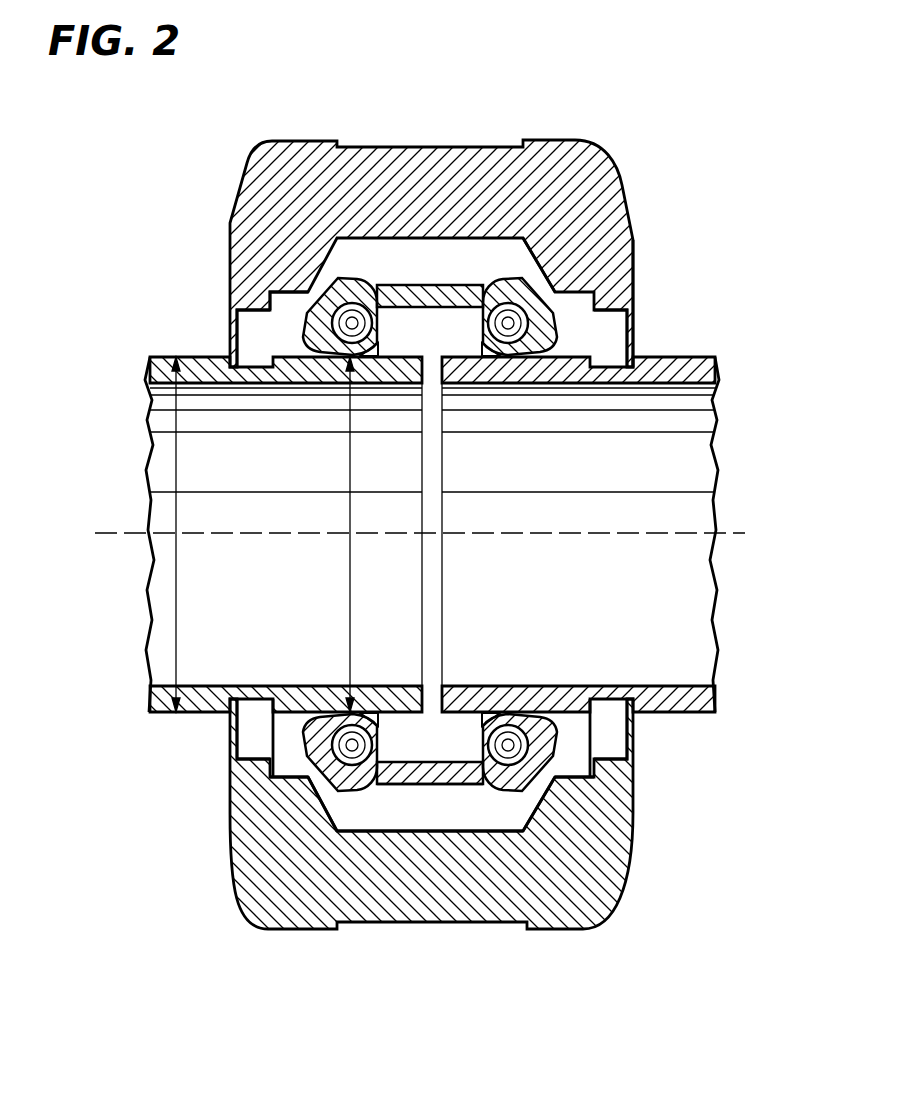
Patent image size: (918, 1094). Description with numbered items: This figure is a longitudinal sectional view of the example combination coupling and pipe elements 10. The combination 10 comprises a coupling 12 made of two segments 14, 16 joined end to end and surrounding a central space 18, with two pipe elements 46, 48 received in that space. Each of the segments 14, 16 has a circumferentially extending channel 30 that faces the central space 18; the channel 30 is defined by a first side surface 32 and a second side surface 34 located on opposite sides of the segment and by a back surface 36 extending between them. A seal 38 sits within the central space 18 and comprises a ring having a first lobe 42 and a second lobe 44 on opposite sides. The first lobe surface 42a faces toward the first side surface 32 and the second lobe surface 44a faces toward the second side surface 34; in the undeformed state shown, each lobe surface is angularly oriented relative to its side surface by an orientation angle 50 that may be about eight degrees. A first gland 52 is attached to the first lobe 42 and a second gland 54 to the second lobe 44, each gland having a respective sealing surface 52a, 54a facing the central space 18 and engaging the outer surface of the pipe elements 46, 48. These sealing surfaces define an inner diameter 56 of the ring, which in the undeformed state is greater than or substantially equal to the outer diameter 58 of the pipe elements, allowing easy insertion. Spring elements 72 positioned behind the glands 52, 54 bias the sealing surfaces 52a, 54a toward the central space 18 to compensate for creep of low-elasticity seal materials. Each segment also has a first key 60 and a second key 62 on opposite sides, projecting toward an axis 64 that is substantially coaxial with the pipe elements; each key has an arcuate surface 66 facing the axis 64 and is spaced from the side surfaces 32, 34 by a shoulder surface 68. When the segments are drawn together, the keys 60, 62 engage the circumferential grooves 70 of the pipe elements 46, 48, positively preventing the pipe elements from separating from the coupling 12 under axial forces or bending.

The combination coupling and pipe elements 10 is at (783, 327).
The coupling 12 is at (627, 152).
The segment 14 is at (270, 907).
The segment 16 is at (237, 183).
The central space 18 is at (619, 530).
The channel 30 is at (421, 718).
The first side surface 32 is at (320, 813).
The second side surface 34 is at (547, 798).
The back surface 36 is at (363, 830).
The seal 38 is at (465, 738).
The first lobe 42 is at (297, 744).
The first lobe surface 42a is at (320, 778).
The second lobe 44 is at (558, 739).
The second lobe surface 44a is at (545, 780).
The pipe element 46 is at (155, 712).
The pipe element 48 is at (713, 367).
The orientation angle 50 is at (390, 208).
The first gland 52 is at (303, 720).
The sealing surface 52a is at (319, 716).
The second gland 54 is at (530, 705).
The sealing surface 54a is at (485, 716).
The inner diameter 56 is at (350, 477).
The outer diameter 58 is at (173, 448).
The first key 60 is at (247, 303).
The second key 62 is at (633, 275).
The axis 64 is at (735, 533).
The arcuate surface 66 is at (622, 330).
The shoulder surface 68 is at (578, 268).
The circumferential groove 70 is at (252, 353).
The spring element 72 is at (365, 722).